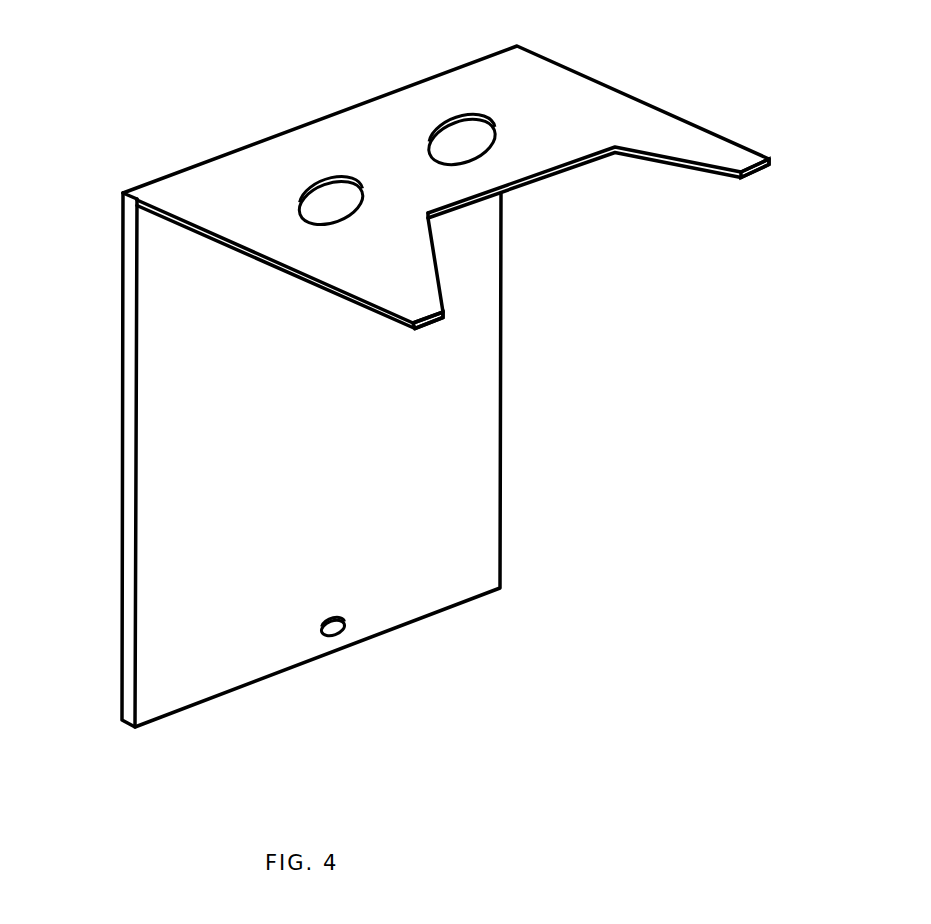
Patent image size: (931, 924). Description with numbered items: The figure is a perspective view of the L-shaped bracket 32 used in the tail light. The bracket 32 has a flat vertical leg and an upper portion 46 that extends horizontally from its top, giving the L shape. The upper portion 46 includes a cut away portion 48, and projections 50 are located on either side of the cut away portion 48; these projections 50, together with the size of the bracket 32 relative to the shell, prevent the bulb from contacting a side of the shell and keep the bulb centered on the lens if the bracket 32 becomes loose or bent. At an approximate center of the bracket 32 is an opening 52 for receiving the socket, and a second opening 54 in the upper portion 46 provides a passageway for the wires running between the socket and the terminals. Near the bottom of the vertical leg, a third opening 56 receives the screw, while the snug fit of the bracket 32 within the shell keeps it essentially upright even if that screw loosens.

The L-shaped bracket 32 is at (152, 549).
The upper portion 46 is at (245, 183).
The cut away portion 48 is at (620, 183).
The projections 50 is at (420, 298).
The opening 52 is at (437, 130).
The second opening 54 is at (331, 183).
The third opening 56 is at (345, 628).